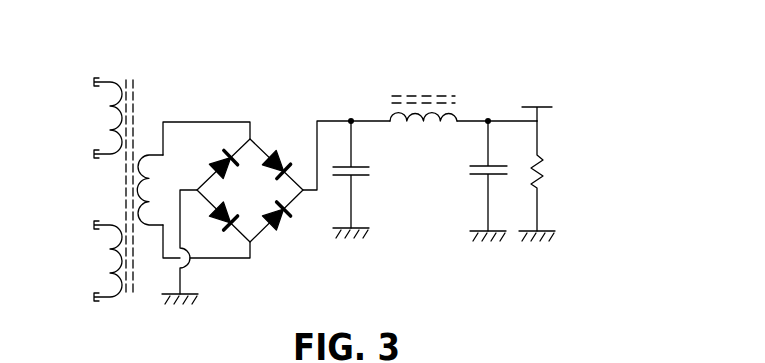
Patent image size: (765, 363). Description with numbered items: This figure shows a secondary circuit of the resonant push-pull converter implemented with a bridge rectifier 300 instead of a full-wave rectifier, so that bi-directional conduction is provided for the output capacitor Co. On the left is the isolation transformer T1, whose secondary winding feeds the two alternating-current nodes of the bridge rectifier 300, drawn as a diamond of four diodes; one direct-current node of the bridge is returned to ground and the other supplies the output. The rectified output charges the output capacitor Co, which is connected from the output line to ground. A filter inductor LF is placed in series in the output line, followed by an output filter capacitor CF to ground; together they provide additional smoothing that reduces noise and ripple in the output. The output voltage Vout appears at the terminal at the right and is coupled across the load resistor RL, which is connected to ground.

The bridge rectifier 300 is at (510, 42).
The isolation transformer T1 is at (128, 171).
The filter inductor LF is at (423, 92).
The output capacitor Co is at (366, 179).
The output filter capacitor CF is at (472, 181).
The output voltage Vout is at (535, 98).
The load resistor RL is at (548, 181).